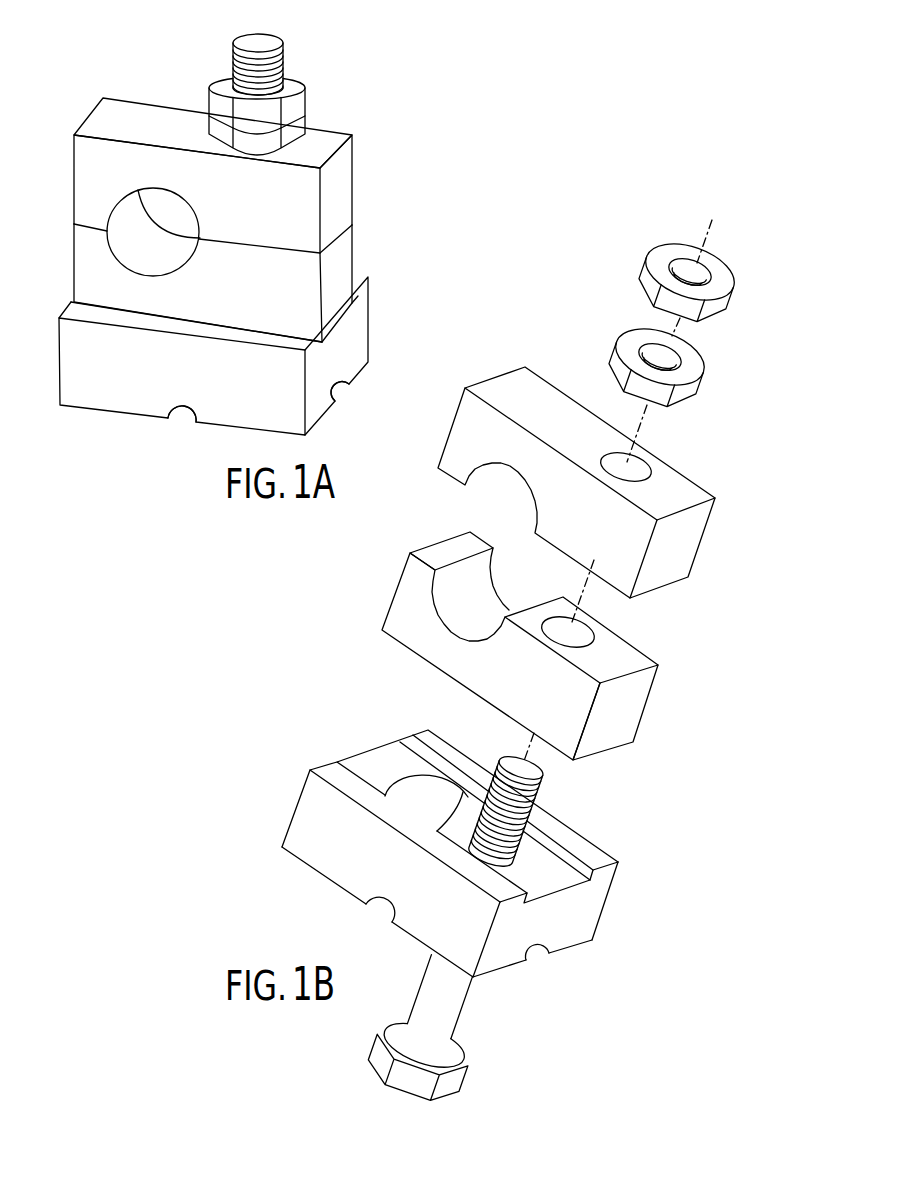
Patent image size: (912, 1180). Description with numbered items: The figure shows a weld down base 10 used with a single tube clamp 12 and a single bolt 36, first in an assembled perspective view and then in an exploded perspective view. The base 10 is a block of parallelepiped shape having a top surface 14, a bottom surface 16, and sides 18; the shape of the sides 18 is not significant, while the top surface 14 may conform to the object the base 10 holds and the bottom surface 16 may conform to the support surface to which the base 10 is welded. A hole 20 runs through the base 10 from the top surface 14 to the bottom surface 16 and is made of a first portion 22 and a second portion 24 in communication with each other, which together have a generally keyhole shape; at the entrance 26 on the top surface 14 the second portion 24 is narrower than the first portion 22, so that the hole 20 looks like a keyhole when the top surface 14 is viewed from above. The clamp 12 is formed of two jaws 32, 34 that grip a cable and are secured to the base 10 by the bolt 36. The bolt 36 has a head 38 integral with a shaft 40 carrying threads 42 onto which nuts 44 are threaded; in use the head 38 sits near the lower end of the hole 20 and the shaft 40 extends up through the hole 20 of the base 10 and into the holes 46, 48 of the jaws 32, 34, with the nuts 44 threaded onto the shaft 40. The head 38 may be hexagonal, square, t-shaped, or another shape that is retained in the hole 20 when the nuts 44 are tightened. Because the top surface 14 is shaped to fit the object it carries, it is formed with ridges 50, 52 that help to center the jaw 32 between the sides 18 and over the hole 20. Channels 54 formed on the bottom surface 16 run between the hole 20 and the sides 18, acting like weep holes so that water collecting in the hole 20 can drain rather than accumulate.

In FIG. 1A, the base 10 is at (209, 235).
In FIG. 1B, the base 10 is at (481, 664).
In FIG. 1A, the clamp 12 is at (213, 220).
In FIG. 1B, the clamp 12 is at (571, 564).
In FIG. 1A, the top surface 14 is at (222, 358).
In FIG. 1B, the top surface 14 is at (453, 852).
In FIG. 1B, the bottom surface 16 is at (312, 870).
In FIG. 1B, the sides 18 is at (317, 844).
In FIG. 1B, the hole 20 is at (386, 779).
In FIG. 1B, the first portion 22 is at (433, 769).
In FIG. 1B, the second portion 24 is at (463, 829).
In FIG. 1B, the entrance 26 is at (410, 786).
In FIG. 1A, the jaw 32 is at (345, 252).
In FIG. 1B, the jaw 32 is at (520, 629).
In FIG. 1A, the jaw 34 is at (338, 178).
In FIG. 1B, the jaw 34 is at (576, 466).
In FIG. 1A, the bolt 36 is at (254, 49).
In FIG. 1B, the bolt 36 is at (478, 930).
In FIG. 1B, the head 38 is at (396, 1029).
In FIG. 1A, the shaft 40 is at (266, 40).
In FIG. 1B, the shaft 40 is at (420, 985).
In FIG. 1A, the threads 42 is at (282, 63).
In FIG. 1B, the threads 42 is at (547, 786).
In FIG. 1A, the nuts 44 is at (214, 132).
In FIG. 1B, the nuts 44 is at (638, 300).
In FIG. 1B, the hole 46 is at (595, 629).
In FIG. 1B, the hole 48 is at (640, 469).
In FIG. 1A, the ridge 50 is at (96, 302).
In FIG. 1B, the ridge 50 is at (480, 872).
In FIG. 1A, the ridge 52 is at (358, 282).
In FIG. 1B, the ridge 52 is at (582, 846).
In FIG. 1A, the channels 54 is at (182, 425).
In FIG. 1B, the channels 54 is at (378, 915).